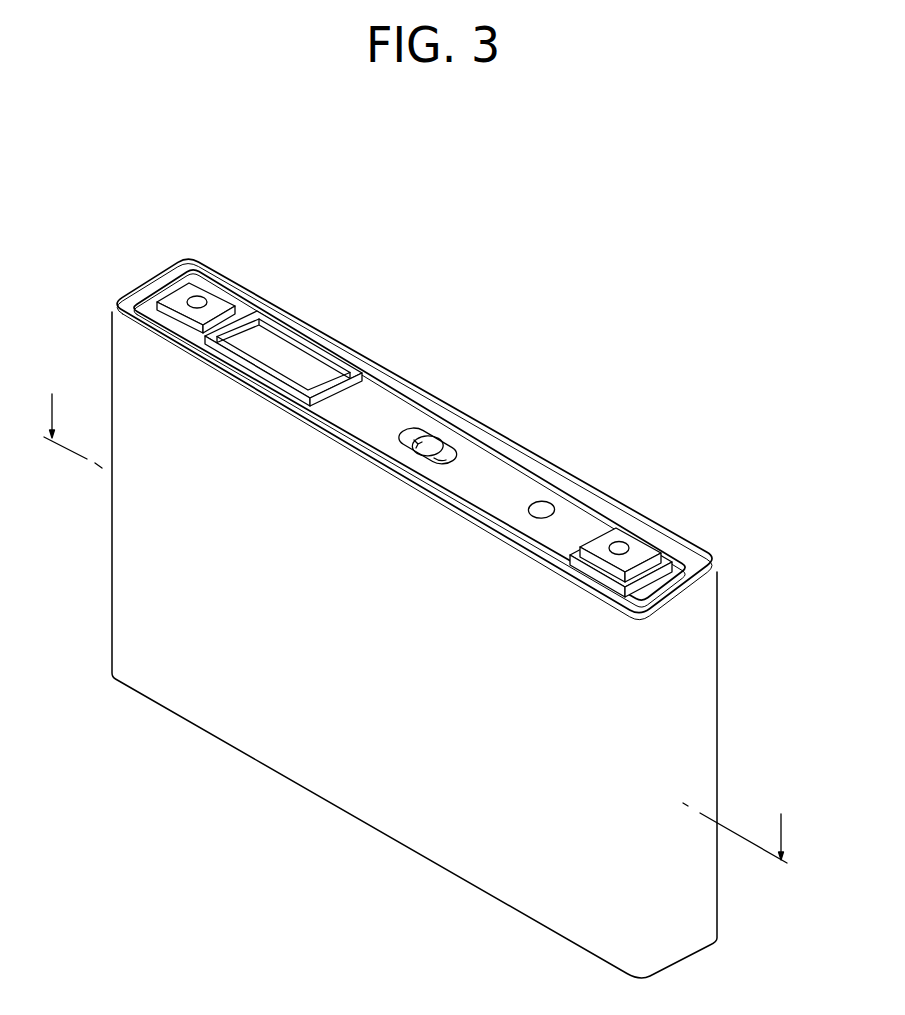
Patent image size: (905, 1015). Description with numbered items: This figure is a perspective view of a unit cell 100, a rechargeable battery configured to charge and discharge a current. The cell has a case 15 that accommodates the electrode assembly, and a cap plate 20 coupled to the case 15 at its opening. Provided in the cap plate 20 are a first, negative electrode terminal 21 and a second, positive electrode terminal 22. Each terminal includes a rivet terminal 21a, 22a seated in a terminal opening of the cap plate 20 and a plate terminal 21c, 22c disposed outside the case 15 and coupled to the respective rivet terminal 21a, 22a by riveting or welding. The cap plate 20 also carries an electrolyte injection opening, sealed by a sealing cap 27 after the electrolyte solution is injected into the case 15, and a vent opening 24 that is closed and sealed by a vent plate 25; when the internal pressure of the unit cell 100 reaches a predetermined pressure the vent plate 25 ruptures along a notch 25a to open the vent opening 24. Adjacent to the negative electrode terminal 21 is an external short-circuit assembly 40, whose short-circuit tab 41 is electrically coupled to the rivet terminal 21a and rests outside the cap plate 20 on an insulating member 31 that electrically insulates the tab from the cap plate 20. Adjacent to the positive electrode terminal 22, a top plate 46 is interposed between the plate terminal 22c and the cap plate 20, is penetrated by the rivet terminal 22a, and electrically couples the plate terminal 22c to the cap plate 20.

The unit cell 100 is at (542, 290).
The case 15 is at (333, 770).
The cap plate 20 is at (385, 404).
The first electrode terminal 21 is at (205, 284).
The rivet terminal 21a is at (192, 298).
The plate terminal 21c is at (223, 302).
The second electrode terminal 22 is at (622, 522).
The rivet terminal 22a is at (627, 546).
The plate terminal 22c is at (633, 560).
The vent opening 24 is at (413, 428).
The vent plate 25 is at (433, 447).
The notch 25a is at (441, 460).
The sealing cap 27 is at (542, 508).
The insulating member 31 is at (268, 322).
The external short-circuit assembly 40 is at (322, 318).
The short-circuit tab 41 is at (330, 376).
The top plate 46 is at (643, 585).